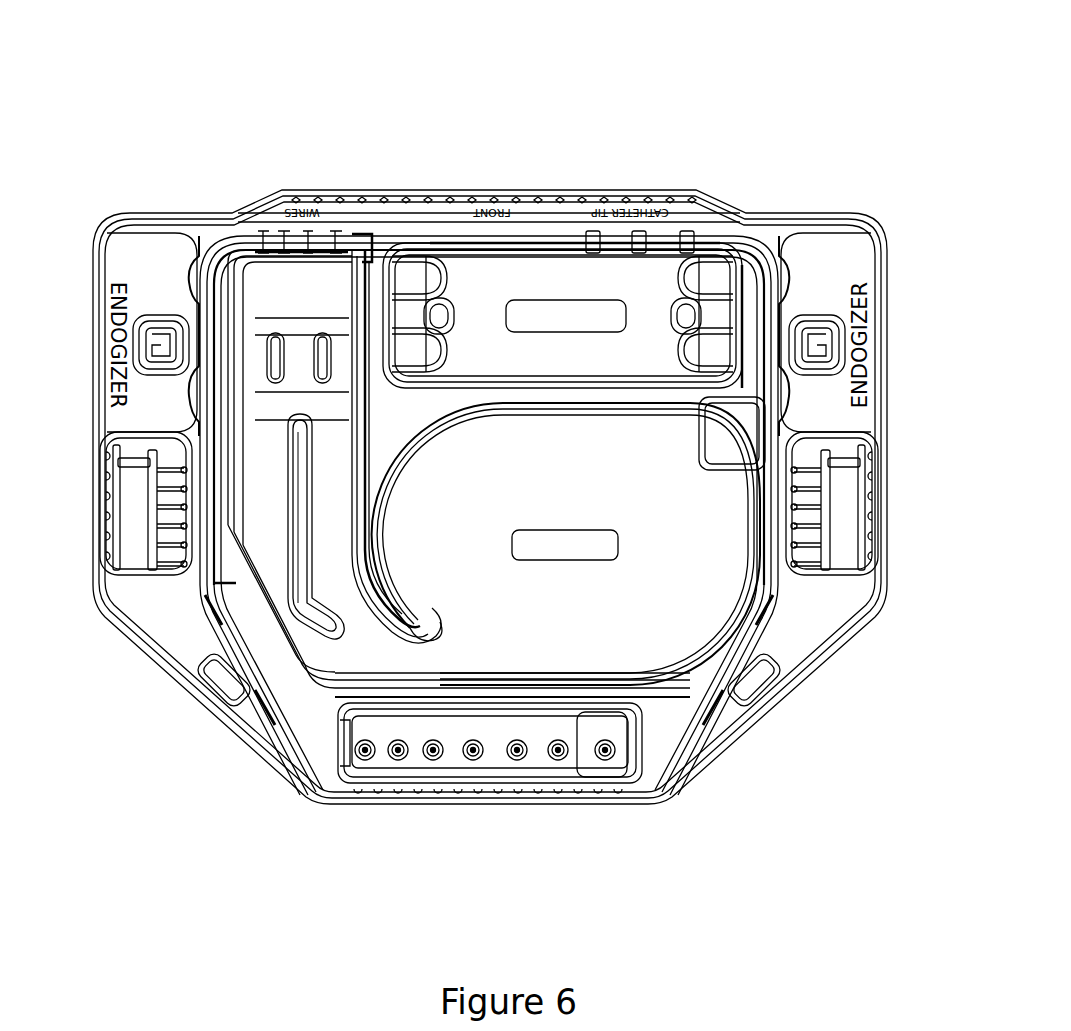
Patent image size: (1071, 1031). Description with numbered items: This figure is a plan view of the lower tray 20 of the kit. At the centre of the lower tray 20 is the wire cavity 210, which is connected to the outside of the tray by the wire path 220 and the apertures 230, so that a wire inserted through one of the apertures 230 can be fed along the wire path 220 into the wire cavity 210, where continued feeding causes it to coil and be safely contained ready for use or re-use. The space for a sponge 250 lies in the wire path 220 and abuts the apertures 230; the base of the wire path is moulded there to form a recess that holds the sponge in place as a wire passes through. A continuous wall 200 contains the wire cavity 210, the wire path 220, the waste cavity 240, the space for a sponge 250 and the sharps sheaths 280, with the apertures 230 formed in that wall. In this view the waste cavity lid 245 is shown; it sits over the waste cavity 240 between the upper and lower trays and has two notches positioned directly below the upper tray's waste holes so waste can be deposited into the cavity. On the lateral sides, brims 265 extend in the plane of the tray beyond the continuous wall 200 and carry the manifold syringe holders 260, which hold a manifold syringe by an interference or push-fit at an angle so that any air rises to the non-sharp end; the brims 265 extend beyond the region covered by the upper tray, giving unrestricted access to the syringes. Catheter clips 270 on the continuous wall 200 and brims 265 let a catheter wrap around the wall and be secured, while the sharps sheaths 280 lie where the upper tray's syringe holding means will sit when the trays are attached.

The lower tray 20 is at (810, 58).
The continuous wall 200 is at (747, 242).
The wire cavity 210 is at (562, 610).
The wire path 220 is at (333, 648).
The apertures 230 is at (336, 238).
The waste cavity 240 is at (436, 312).
The waste cavity lid 245 is at (640, 298).
The space for a sponge 250 is at (338, 298).
The manifold syringe holders 260 is at (134, 507).
The brims 265 is at (150, 617).
The catheter clips 270 is at (187, 398).
The sharps sheaths 280 is at (604, 758).